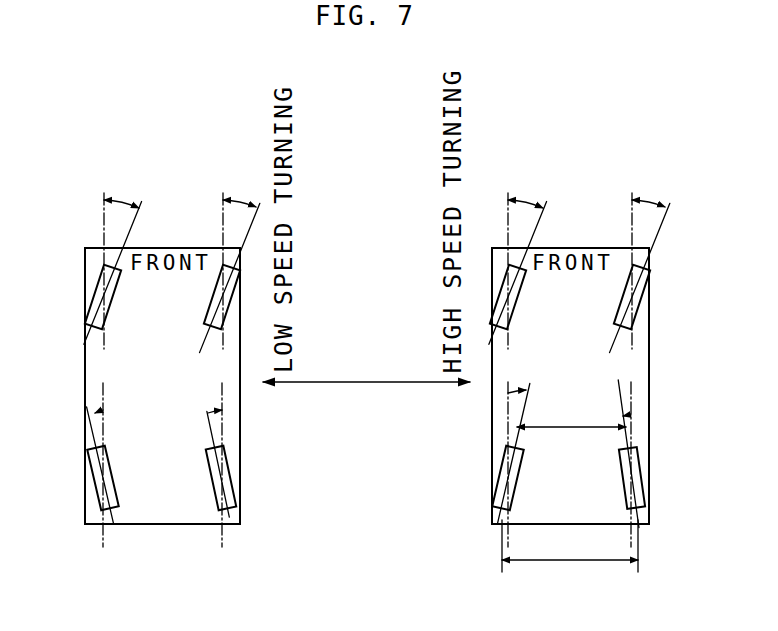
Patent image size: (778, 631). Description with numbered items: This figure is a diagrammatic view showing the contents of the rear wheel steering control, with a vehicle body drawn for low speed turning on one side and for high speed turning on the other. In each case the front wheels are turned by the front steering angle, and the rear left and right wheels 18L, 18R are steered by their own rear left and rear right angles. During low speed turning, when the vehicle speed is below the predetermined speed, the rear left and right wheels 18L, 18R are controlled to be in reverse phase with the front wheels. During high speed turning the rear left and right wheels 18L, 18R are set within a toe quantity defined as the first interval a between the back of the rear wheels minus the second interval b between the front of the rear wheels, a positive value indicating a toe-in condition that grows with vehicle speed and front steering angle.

The rear left wheel 18L is at (97, 493).
The rear right wheel 18R is at (233, 483).
The first interval a is at (571, 414).
The second interval b is at (570, 546).